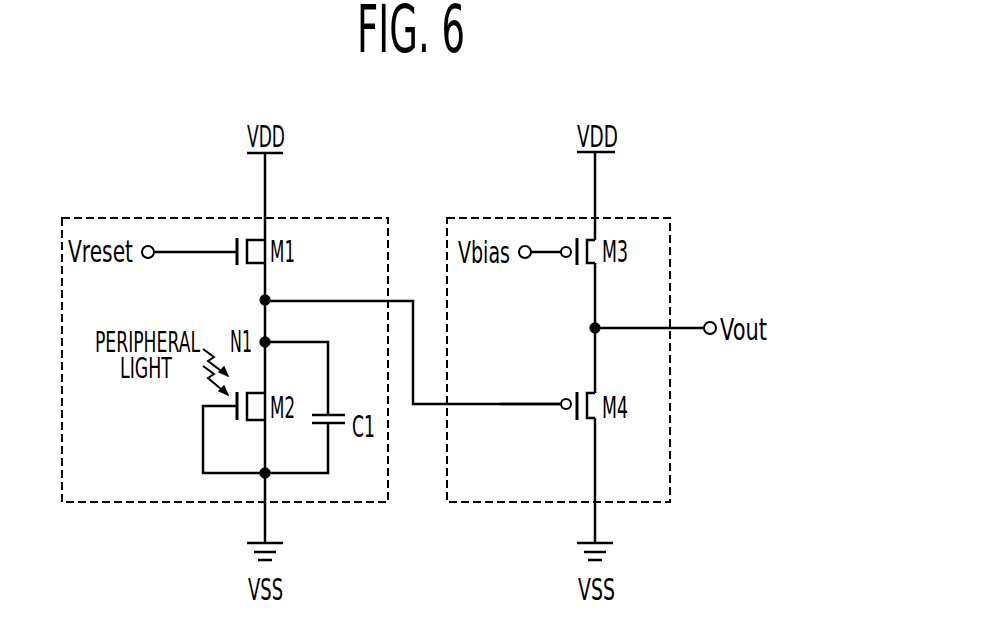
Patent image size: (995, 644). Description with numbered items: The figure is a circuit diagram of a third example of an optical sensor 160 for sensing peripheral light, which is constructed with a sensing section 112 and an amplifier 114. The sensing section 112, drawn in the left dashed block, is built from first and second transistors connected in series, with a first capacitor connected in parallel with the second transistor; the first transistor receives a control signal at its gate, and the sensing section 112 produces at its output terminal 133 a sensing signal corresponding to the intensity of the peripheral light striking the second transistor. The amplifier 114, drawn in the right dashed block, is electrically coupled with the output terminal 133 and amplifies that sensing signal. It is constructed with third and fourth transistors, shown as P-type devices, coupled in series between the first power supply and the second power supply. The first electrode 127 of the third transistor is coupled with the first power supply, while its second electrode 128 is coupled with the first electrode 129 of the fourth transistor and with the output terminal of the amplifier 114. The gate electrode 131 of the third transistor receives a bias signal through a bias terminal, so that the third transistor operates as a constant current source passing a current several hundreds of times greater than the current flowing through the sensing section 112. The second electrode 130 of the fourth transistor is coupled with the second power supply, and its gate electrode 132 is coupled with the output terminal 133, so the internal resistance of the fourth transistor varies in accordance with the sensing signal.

The sensing section 112 is at (90, 218).
The amplifier 114 is at (463, 218).
The optical sensor 160 is at (680, 164).
The first electrode of third transistor 127 is at (598, 200).
The second electrode of third transistor 128 is at (598, 287).
The first electrode of fourth transistor 129 is at (598, 360).
The second electrode of fourth transistor 130 is at (598, 442).
The gate electrode of third transistor 131 is at (541, 257).
The gate electrode of fourth transistor 132 is at (541, 408).
The output terminal of sensing section 133 is at (330, 300).